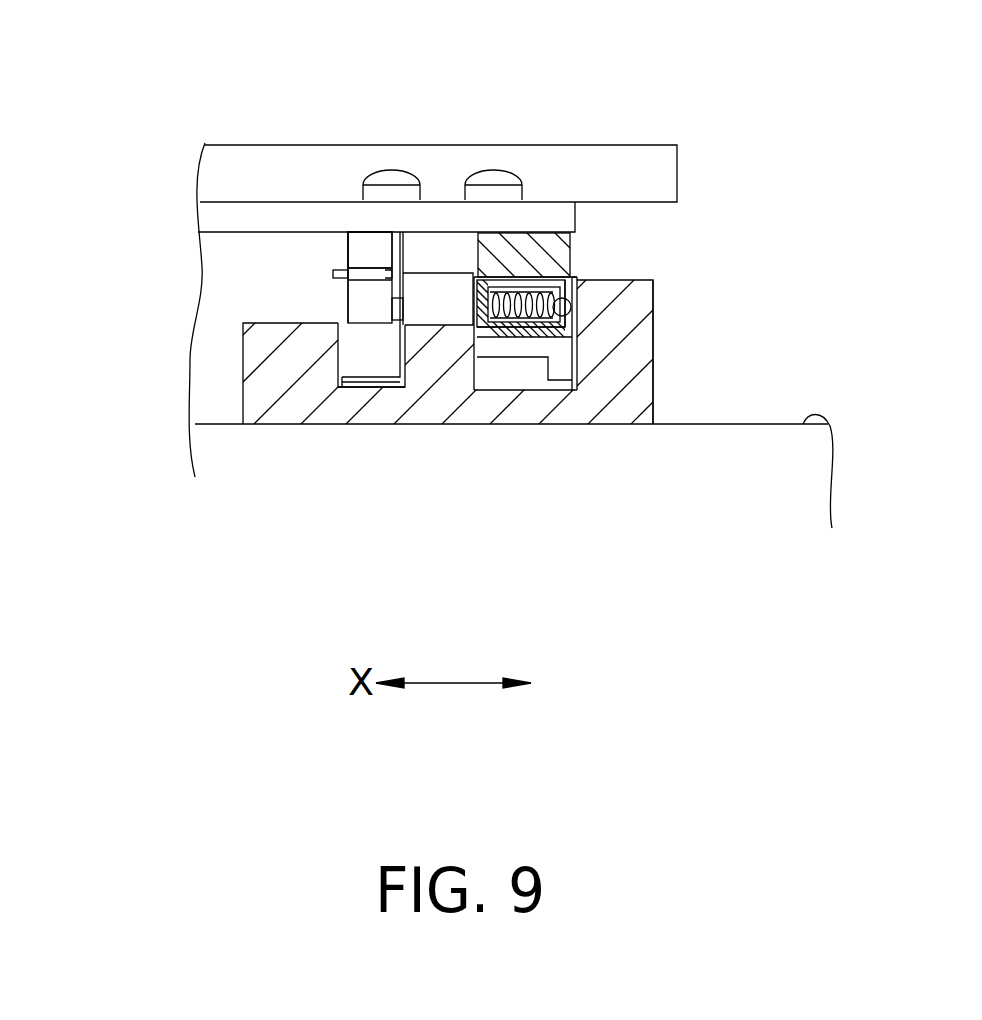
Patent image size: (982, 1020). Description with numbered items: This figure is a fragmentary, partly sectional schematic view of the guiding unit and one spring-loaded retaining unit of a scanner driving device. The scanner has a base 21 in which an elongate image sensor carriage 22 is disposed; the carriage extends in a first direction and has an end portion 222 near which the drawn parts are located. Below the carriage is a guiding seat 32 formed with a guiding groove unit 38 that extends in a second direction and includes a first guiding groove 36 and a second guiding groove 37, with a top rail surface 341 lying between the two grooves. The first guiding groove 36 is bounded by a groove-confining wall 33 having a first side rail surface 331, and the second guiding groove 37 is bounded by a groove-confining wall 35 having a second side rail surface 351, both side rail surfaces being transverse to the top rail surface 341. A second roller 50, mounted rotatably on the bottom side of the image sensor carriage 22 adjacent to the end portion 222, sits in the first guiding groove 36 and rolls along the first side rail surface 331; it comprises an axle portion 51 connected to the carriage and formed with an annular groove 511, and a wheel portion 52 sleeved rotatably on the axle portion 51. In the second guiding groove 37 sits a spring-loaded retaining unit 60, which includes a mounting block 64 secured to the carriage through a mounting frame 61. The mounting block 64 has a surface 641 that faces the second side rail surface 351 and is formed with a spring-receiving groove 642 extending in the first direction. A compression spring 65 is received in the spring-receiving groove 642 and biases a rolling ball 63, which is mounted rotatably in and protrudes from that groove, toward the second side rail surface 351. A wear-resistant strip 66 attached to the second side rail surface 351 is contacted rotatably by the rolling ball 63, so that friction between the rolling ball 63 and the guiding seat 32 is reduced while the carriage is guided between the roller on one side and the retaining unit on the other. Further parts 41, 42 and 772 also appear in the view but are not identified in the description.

The base 21 is at (845, 425).
The image sensor carriage 22 is at (240, 144).
The end portion 222 is at (645, 155).
The guiding seat 32 is at (668, 395).
The groove-confining wall 33 is at (280, 372).
The first side rail surface 331 is at (337, 373).
The top rail surface 341 is at (437, 325).
The groove-confining wall 35 is at (630, 363).
The second side rail surface 351 is at (572, 352).
The first guiding groove 36 is at (380, 390).
The second guiding groove 37 is at (565, 388).
The guiding groove unit 38 is at (558, 580).
The slide block 41 is at (397, 232).
The engaging block 42 is at (447, 283).
The second roller 50 is at (343, 229).
The axle portion 51 is at (348, 249).
The annular groove 511 is at (335, 273).
The wheel portion 52 is at (352, 365).
The spring-loaded retaining unit 60 is at (590, 257).
The mounting frame 61 is at (528, 240).
The rolling ball 63 is at (565, 288).
The mounting block 64 is at (520, 325).
The surface 641 is at (577, 278).
The spring-receiving groove 642 is at (548, 322).
The spring 65 is at (503, 322).
The wear-resistant strip 66 is at (572, 307).
The flange 772 is at (350, 279).